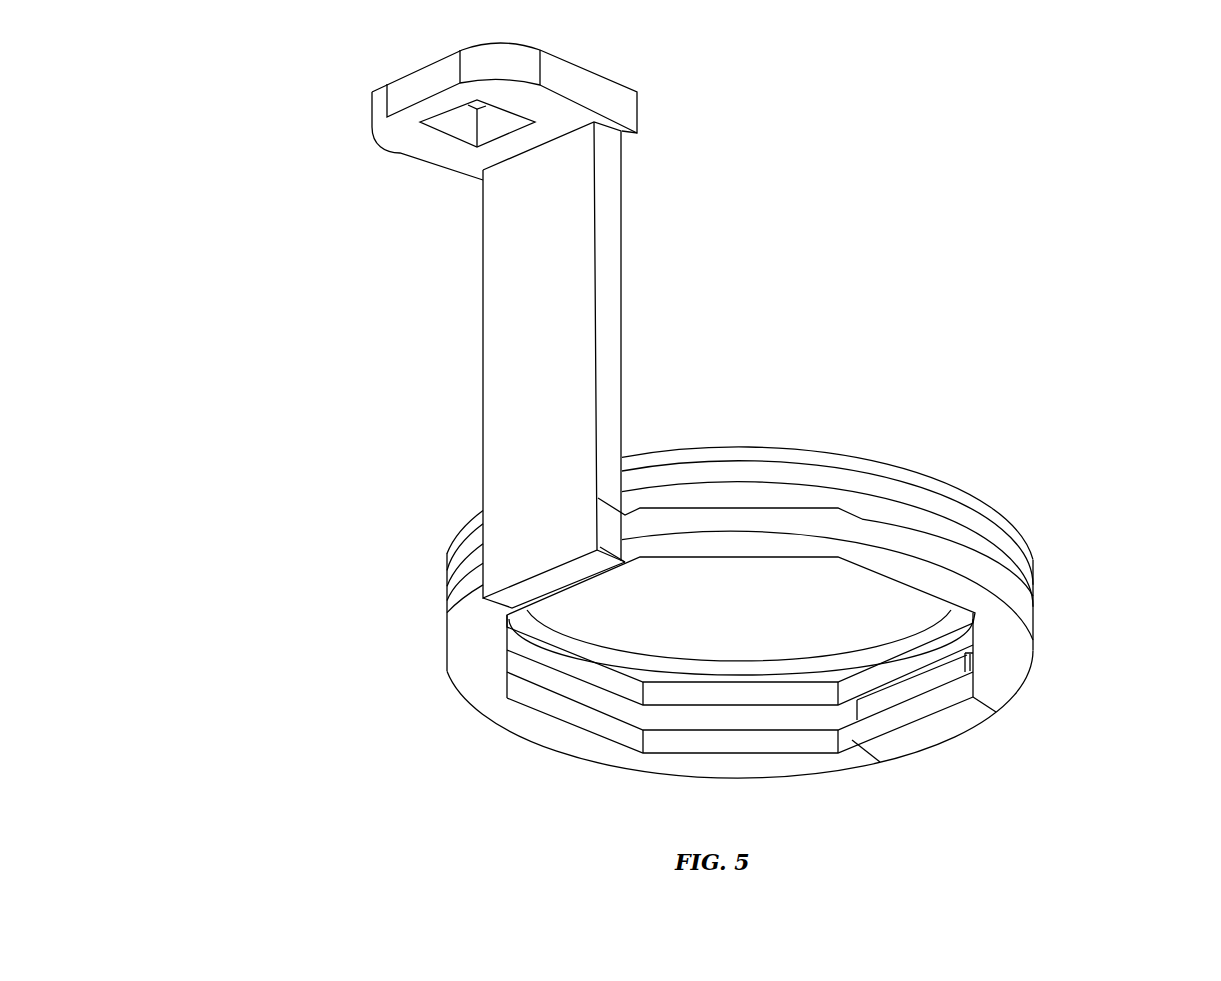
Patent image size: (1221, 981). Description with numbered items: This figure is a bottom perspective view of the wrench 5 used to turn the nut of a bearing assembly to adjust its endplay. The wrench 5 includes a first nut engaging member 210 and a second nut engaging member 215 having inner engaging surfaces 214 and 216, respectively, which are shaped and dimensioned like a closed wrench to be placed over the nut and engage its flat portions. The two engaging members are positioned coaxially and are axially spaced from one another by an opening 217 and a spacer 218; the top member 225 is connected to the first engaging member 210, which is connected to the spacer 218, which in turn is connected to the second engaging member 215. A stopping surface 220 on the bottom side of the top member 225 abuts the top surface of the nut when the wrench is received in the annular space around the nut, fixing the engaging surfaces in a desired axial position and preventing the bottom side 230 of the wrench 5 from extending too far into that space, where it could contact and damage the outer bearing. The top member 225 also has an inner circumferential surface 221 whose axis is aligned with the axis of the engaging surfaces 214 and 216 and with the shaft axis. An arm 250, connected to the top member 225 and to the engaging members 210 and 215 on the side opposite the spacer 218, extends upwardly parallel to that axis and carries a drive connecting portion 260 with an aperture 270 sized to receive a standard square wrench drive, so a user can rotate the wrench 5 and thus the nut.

The wrench 5 is at (327, 507).
The drive connecting portion 260 is at (641, 89).
The aperture 270 is at (457, 120).
The arm 250 is at (530, 293).
The top member 225 is at (1016, 519).
The first nut engaging member 210 is at (708, 712).
The inner engaging surface 214 is at (545, 660).
The inner engaging surface 216 is at (572, 714).
The second nut engaging member 215 is at (613, 752).
The opening 217 is at (810, 717).
The spacer 218 is at (915, 683).
The stopping surface 220 is at (847, 665).
The inner circumferential surface 221 is at (877, 645).
The bottom side 230 is at (970, 710).